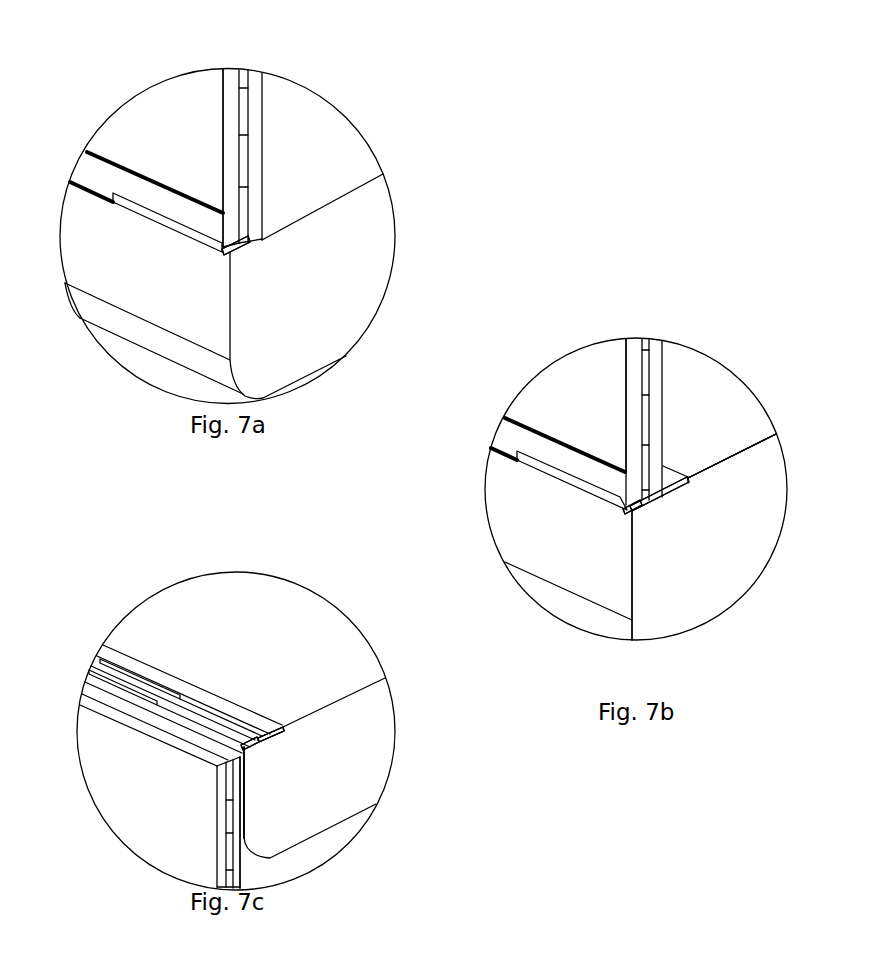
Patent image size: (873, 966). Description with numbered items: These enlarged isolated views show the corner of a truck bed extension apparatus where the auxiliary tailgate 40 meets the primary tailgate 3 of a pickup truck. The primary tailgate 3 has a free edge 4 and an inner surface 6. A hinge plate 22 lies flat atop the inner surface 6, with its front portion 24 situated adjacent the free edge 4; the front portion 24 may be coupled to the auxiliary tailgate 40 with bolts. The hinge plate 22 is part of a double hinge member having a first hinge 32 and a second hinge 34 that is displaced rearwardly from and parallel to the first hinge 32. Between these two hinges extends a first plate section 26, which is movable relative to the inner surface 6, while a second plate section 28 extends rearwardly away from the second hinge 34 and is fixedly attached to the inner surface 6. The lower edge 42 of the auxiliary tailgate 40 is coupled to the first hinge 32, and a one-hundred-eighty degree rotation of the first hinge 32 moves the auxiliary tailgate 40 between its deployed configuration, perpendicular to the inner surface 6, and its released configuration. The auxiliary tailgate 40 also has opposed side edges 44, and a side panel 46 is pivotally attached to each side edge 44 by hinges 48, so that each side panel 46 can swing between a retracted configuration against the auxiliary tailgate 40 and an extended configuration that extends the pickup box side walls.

In FIG. 7B, the primary tailgate 3 is at (733, 578).
In FIG. 7A, the free edge 4 is at (82, 266).
In FIG. 7B, the free edge 4 is at (505, 518).
In FIG. 7B, the inner surface 6 is at (743, 405).
In FIG. 7C, the inner surface 6 is at (262, 595).
In FIG. 7A, the hinge plate 22 is at (196, 254).
In FIG. 7B, the hinge plate 22 is at (661, 503).
In FIG. 7C, the hinge plate 22 is at (273, 747).
In FIG. 7A, the front portion 24 is at (87, 170).
In FIG. 7B, the front portion 24 is at (508, 438).
In FIG. 7A, the first plate section 26 is at (238, 249).
In FIG. 7B, the first plate section 26 is at (640, 513).
In FIG. 7C, the first plate section 26 is at (255, 756).
In FIG. 7B, the second plate section 28 is at (677, 488).
In FIG. 7C, the second plate section 28 is at (237, 710).
In FIG. 7A, the first hinge 32 is at (173, 226).
In FIG. 7B, the first hinge 32 is at (603, 505).
In FIG. 7C, the first hinge 32 is at (245, 752).
In FIG. 7C, the second hinge 34 is at (283, 727).
In FIG. 7A, the auxiliary tailgate 40 is at (185, 148).
In FIG. 7B, the auxiliary tailgate 40 is at (572, 375).
In FIG. 7C, the auxiliary tailgate 40 is at (247, 865).
In FIG. 7C, the lower edge 42 is at (87, 690).
In FIG. 7A, the side edges 44 is at (232, 93).
In FIG. 7B, the side edges 44 is at (633, 350).
In FIG. 7A, the side panels 46 is at (330, 173).
In FIG. 7B, the side panels 46 is at (663, 402).
In FIG. 7C, the side panels 46 is at (128, 810).
In FIG. 7A, the hinges 48 is at (248, 105).
In FIG. 7B, the hinges 48 is at (650, 372).
In FIG. 7C, the hinges 48 is at (222, 850).